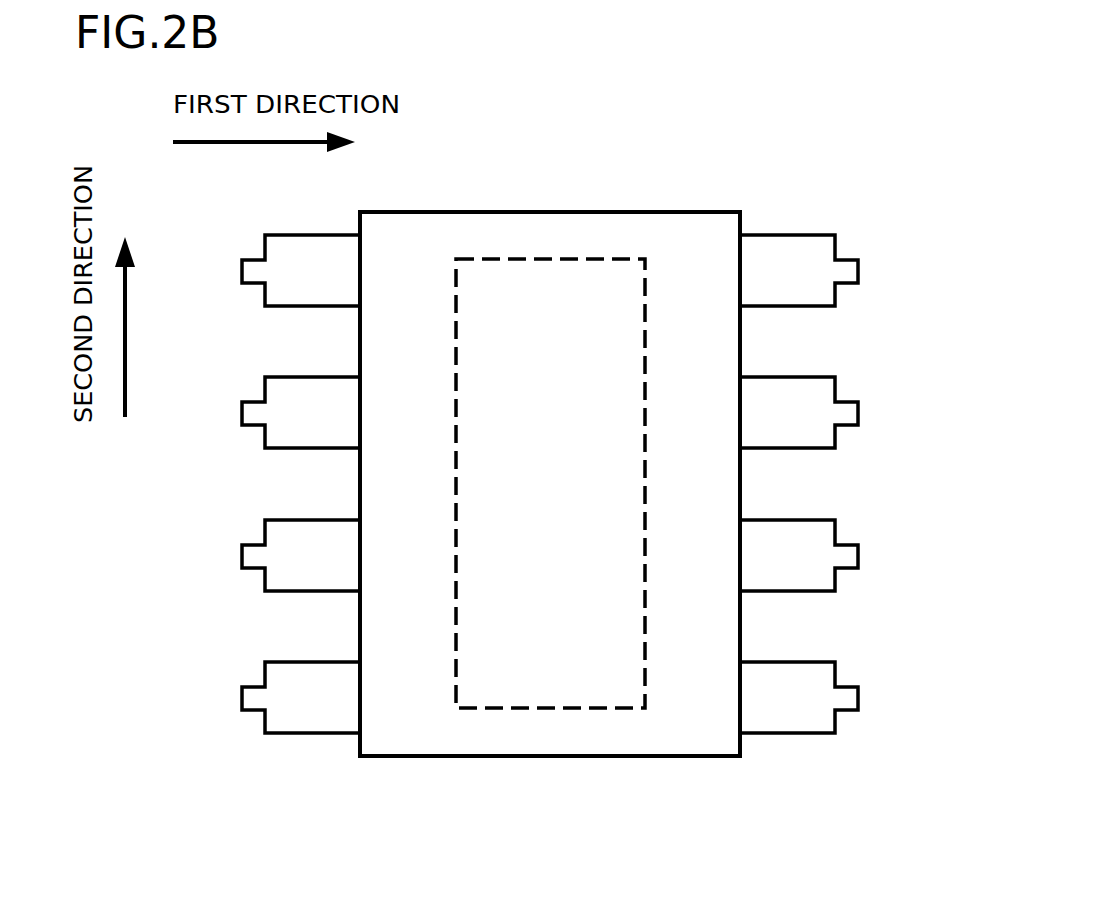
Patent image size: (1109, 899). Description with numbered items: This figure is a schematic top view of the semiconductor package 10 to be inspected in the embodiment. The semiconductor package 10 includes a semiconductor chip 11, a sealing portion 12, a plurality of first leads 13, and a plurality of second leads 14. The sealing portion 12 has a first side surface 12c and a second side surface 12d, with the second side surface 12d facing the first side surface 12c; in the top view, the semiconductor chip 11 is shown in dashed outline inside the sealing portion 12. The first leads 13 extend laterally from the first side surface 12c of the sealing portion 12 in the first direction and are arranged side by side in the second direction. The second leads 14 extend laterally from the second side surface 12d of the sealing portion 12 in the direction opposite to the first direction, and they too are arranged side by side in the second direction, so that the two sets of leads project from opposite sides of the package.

The semiconductor package 10 is at (818, 184).
The semiconductor chip 11 is at (552, 283).
The sealing portion 12 is at (693, 235).
The first side surface 12c is at (742, 353).
The second side surface 12d is at (360, 353).
The first leads 13 is at (845, 271).
The second leads 14 is at (257, 272).